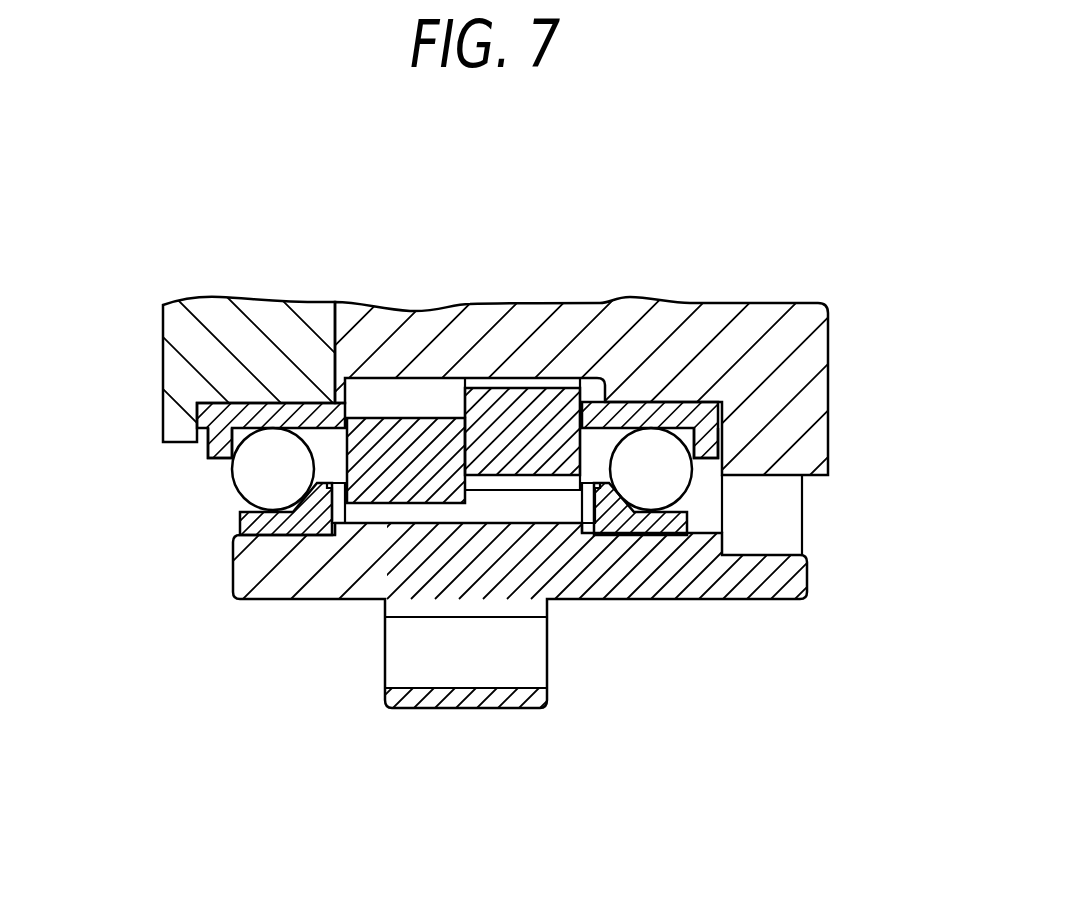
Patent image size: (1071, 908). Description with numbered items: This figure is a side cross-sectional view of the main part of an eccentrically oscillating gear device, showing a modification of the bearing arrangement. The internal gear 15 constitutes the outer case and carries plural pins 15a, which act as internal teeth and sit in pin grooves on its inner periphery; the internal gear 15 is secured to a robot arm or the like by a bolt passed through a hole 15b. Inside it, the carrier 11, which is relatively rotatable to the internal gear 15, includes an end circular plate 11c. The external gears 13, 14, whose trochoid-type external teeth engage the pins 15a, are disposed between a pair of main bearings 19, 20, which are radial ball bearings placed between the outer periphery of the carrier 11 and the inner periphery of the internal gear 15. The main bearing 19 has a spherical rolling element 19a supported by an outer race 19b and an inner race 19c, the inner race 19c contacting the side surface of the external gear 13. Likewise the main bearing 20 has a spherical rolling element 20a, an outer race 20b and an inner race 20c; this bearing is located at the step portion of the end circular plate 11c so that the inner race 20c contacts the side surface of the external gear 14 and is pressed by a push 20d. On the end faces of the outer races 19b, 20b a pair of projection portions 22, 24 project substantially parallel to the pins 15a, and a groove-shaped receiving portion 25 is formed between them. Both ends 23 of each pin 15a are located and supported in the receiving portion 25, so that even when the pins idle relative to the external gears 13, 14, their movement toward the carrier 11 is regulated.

The carrier 11 is at (773, 291).
The end circular plate 11c is at (165, 352).
The external gear 13 is at (530, 400).
The external gear 14 is at (404, 428).
The internal gear 15 is at (258, 592).
The pin 15a is at (515, 513).
The hole 15b is at (432, 678).
The main bearing 19 is at (723, 451).
The spherical rolling element 19a is at (653, 438).
The outer race 19b is at (699, 487).
The inner race 19c is at (706, 418).
The main bearing 20 is at (240, 421).
The spherical rolling element 20a is at (240, 470).
The outer race 20b is at (243, 527).
The inner race 20c is at (240, 403).
The push 20d is at (200, 427).
The projection portion 22 is at (330, 412).
The end of pin 23 is at (350, 523).
The projection portion 24 is at (340, 527).
The receiving portion 25 is at (362, 523).